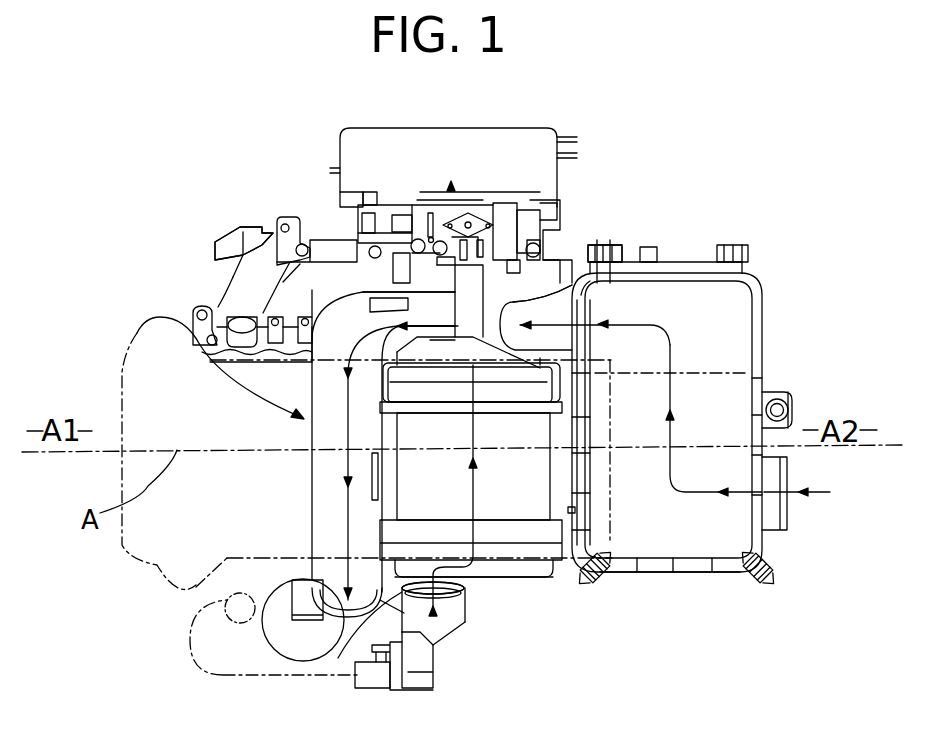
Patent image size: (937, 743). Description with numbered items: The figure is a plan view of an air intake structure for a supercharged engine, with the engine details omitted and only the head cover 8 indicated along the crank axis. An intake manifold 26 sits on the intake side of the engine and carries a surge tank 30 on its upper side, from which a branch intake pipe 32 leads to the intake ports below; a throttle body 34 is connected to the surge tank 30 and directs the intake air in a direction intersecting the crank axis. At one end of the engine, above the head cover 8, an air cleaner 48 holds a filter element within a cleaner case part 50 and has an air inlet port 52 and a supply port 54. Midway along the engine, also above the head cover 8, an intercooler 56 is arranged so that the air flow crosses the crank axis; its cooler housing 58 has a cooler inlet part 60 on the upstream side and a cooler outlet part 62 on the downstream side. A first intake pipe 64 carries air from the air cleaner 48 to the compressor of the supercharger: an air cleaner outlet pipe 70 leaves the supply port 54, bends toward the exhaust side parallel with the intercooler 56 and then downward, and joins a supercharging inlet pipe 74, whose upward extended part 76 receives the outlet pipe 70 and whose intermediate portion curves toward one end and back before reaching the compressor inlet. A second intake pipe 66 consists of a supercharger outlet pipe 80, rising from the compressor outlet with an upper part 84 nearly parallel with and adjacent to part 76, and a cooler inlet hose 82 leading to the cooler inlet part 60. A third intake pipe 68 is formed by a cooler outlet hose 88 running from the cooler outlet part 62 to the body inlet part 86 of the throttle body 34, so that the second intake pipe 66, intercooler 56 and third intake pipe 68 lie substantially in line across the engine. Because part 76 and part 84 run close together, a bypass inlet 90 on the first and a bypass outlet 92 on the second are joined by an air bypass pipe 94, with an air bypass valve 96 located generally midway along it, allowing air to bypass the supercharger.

The head cover 8 is at (157, 566).
The intake manifold 26 is at (274, 195).
The surge tank 30 is at (510, 145).
The branch intake pipe 32 is at (263, 277).
The throttle body 34 is at (530, 203).
The air cleaner 48 is at (771, 298).
The cleaner case part 50 is at (718, 548).
The air inlet port 52 is at (775, 517).
The supply port 54 is at (591, 247).
The intercooler 56 is at (560, 592).
The cooler housing 58 is at (598, 573).
The cooler inlet part 60 is at (460, 587).
The cooler outlet part 62 is at (660, 328).
The first intake pipe 64 is at (163, 322).
The second intake pipe 66 is at (447, 652).
The third intake pipe 68 is at (493, 291).
The air cleaner outlet pipe 70 is at (347, 310).
The supercharging inlet pipe 74 is at (292, 646).
The upward extended part 76 is at (334, 632).
The supercharger outlet pipe 80 is at (386, 636).
The cooler inlet hose 82 is at (450, 608).
The upper part 84 is at (441, 629).
The body inlet part 86 is at (452, 255).
The cooler outlet hose 88 is at (562, 302).
The bypass inlet 90 is at (291, 601).
The bypass outlet 92 is at (364, 686).
The air bypass pipe 94 is at (190, 650).
The air bypass valve 96 is at (238, 617).